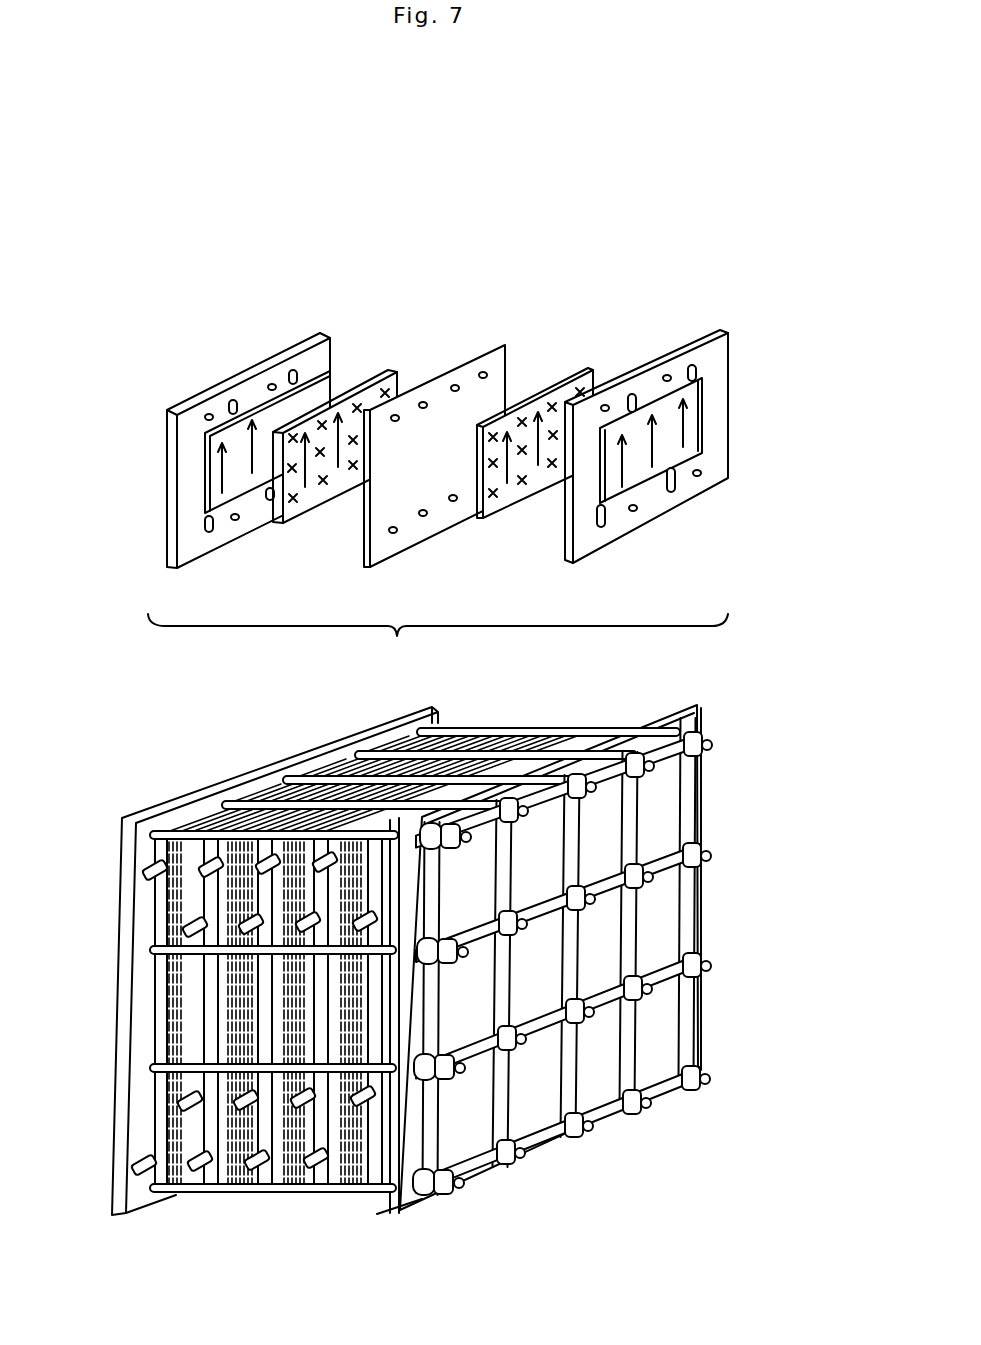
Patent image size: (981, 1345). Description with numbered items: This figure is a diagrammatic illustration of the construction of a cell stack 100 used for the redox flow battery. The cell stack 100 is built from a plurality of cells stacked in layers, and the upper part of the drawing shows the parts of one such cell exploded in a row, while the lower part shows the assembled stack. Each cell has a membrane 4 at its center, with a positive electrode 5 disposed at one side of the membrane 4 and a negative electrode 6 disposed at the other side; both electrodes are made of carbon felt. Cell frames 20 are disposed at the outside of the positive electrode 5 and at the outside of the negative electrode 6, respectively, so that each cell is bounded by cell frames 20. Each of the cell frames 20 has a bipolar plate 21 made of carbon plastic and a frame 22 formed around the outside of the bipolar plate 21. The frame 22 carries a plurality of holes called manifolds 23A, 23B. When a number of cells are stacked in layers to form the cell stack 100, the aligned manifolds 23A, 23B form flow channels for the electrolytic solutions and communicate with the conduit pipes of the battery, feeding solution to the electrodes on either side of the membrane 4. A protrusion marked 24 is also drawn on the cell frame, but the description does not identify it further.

The cell stack 100 is at (255, 1233).
The cell frame 20 is at (208, 382).
The positive electrode 5 is at (363, 385).
The membrane 4 is at (460, 367).
The negative electrode 6 is at (550, 382).
The frame 22 is at (717, 355).
The bipolar plate 21 is at (690, 422).
The protrusion 24 is at (622, 398).
The manifold 23A is at (673, 494).
The manifold 23B is at (700, 476).